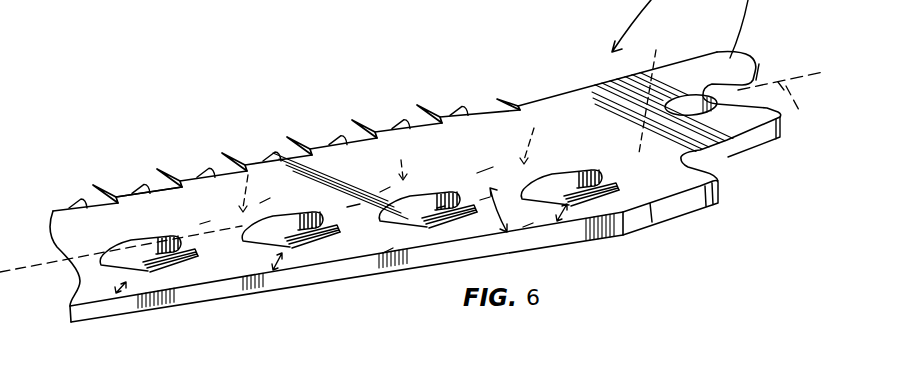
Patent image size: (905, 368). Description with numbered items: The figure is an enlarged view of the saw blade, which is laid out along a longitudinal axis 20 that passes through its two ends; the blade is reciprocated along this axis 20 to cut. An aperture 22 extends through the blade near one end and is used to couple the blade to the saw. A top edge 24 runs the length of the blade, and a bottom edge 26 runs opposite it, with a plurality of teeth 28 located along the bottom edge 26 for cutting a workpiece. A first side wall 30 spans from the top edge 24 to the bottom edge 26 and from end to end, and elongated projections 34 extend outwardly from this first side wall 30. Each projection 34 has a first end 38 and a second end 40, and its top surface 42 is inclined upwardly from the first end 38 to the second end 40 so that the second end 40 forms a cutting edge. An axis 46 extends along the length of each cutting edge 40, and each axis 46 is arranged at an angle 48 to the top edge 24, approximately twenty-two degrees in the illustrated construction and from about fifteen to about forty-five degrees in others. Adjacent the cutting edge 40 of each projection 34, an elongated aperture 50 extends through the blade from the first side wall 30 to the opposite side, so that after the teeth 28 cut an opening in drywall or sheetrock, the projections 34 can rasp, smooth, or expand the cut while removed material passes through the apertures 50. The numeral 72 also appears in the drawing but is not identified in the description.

The longitudinal axis 20 is at (780, 108).
The aperture 22 is at (704, 107).
The top edge 24 is at (675, 208).
The bottom edge 26 is at (417, 108).
The teeth 28 is at (290, 136).
The first side wall 30 is at (130, 217).
The elongated projections 34 is at (320, 226).
The first end 38 is at (187, 265).
The second end 40 is at (172, 238).
The top surface 42 is at (157, 273).
The axis 46 is at (341, 150).
The angle 48 is at (126, 289).
The elongated aperture 50 is at (130, 256).
The connector 72 is at (287, 0).